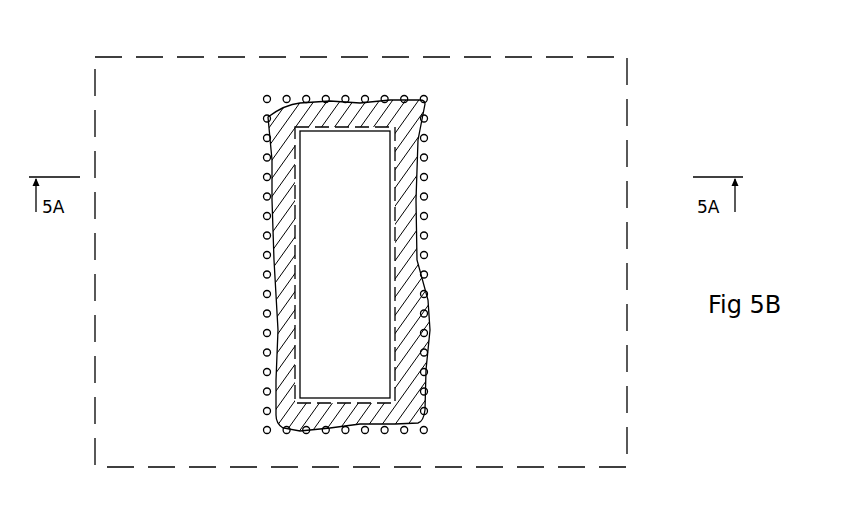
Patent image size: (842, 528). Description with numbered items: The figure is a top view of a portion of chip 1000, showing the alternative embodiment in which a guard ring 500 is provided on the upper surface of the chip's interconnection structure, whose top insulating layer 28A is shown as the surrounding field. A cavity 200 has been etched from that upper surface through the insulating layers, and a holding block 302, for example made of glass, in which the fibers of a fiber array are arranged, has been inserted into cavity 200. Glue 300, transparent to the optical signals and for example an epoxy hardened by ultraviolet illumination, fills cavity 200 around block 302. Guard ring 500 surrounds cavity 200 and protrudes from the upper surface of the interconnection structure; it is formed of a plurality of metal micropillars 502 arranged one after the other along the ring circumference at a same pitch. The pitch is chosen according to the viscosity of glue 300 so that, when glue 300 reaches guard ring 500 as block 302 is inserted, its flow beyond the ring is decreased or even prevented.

The insulating layer 28A is at (594, 72).
The chip 1000 is at (630, 133).
The guard ring 500 is at (436, 97).
The metal micropillars 502 is at (427, 120).
The cavity 200 is at (397, 203).
The holding block 302 is at (368, 228).
The glue 300 is at (424, 268).